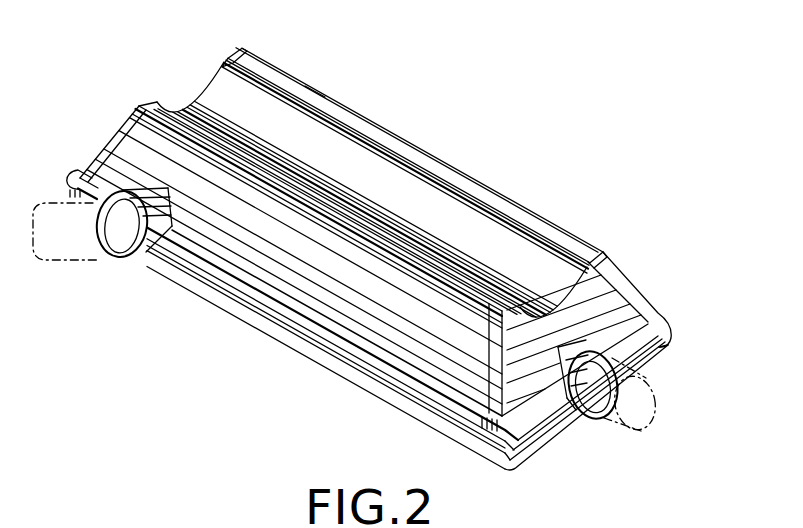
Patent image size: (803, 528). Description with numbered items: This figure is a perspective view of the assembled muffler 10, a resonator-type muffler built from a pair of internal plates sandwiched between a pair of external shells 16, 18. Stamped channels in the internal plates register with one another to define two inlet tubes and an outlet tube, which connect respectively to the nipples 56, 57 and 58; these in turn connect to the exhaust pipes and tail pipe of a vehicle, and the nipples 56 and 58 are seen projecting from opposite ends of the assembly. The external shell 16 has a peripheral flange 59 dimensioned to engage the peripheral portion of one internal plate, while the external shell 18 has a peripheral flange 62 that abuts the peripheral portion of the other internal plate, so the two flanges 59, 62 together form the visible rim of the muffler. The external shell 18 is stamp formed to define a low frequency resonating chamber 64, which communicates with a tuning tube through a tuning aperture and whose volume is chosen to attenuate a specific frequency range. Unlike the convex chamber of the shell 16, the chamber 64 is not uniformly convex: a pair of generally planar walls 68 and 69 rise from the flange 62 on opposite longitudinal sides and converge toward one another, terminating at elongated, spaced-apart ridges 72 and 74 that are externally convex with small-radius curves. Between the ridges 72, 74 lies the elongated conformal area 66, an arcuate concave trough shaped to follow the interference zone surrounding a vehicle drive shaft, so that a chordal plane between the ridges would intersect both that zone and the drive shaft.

The muffler 10 is at (538, 161).
The external shell 16 is at (538, 443).
The external shell 18 is at (412, 158).
The nipple 56 is at (80, 262).
The nipple 57 is at (314, 90).
The nipple 58 is at (604, 420).
The peripheral flange 59 is at (395, 380).
The peripheral flange 62 is at (275, 298).
The low frequency resonating chamber 64 is at (623, 270).
The conformal area 66 is at (218, 99).
The planar wall 68 is at (273, 255).
The planar wall 69 is at (632, 293).
The ridge 72 is at (139, 105).
The ridge 74 is at (242, 51).